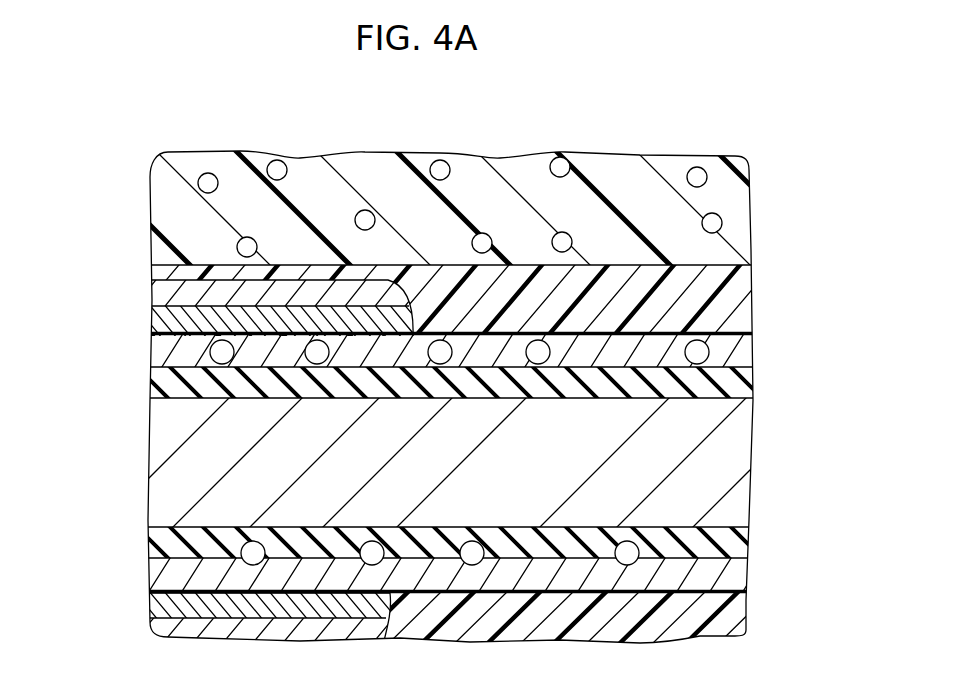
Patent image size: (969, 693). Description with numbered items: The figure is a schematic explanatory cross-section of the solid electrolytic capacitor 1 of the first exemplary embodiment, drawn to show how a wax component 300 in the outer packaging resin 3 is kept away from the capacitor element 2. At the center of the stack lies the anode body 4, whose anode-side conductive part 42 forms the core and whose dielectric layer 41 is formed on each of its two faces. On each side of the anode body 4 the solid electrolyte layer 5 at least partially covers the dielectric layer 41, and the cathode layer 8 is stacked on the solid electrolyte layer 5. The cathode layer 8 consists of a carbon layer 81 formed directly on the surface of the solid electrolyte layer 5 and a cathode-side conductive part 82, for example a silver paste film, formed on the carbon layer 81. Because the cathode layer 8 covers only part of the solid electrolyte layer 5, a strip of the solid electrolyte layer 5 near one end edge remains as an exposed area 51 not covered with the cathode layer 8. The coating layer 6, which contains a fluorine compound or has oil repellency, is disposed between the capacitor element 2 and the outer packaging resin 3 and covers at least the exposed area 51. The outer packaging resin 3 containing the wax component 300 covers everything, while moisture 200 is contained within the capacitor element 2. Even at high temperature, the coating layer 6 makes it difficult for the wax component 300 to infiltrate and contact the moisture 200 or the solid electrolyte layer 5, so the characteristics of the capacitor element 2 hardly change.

The solid electrolytic capacitor 1 is at (320, 154).
The capacitor element 2 is at (55, 286).
The outer packaging resin 3 is at (510, 160).
The wax component 300 is at (488, 182).
The anode body 4 is at (98, 358).
The dielectric layer 41 is at (428, 459).
The anode-side conductive part 42 is at (163, 457).
The solid electrolyte layer 5 is at (420, 460).
The moisture 200 is at (454, 452).
The exposed area 51 is at (473, 468).
The coating layer 6 is at (462, 458).
The cathode layer 8 is at (237, 458).
The carbon layer 81 is at (260, 459).
The cathode-side conductive part 82 is at (259, 458).